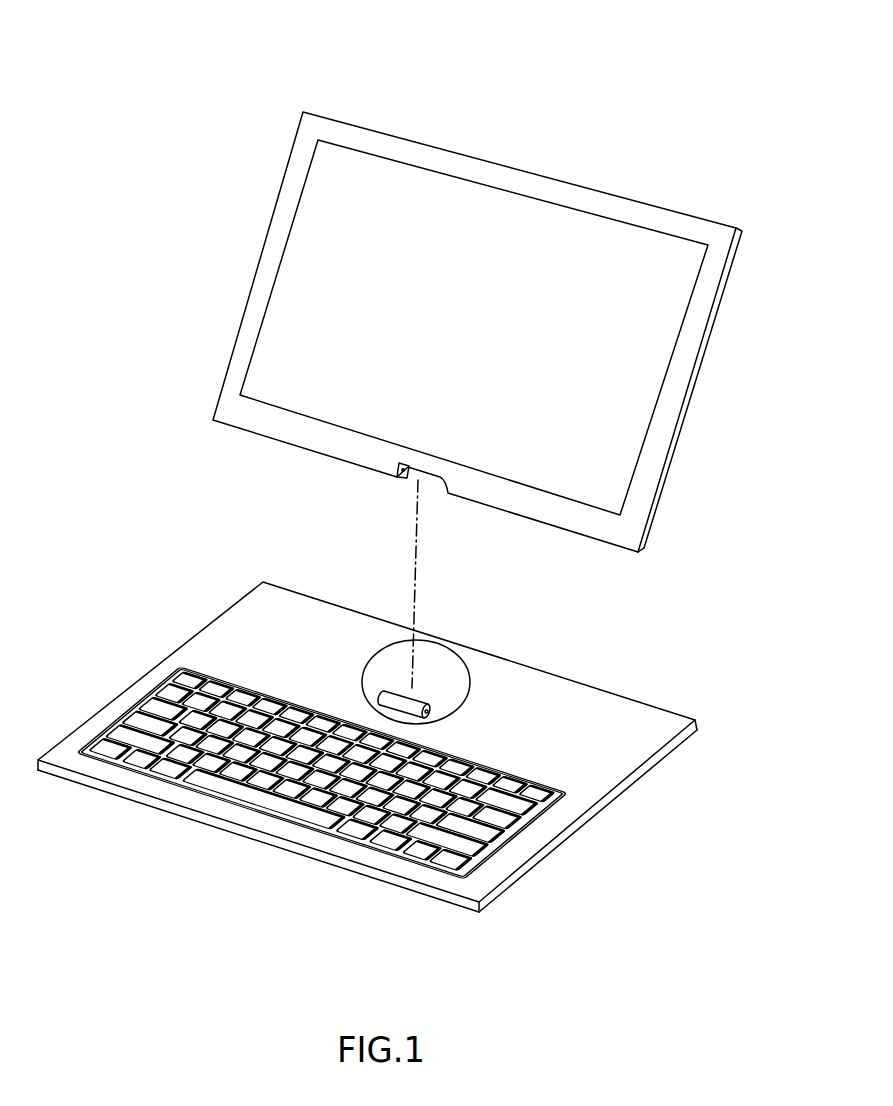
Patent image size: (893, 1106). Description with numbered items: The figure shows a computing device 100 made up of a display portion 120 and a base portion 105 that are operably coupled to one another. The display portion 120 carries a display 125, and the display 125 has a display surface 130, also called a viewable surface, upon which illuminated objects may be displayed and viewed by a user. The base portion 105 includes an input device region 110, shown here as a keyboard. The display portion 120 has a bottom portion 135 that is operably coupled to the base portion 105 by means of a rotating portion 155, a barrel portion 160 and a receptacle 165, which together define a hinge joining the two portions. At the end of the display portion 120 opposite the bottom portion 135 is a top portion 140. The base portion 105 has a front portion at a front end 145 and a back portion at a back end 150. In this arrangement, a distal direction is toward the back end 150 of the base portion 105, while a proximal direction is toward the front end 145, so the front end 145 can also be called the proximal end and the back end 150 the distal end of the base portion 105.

The computing device 100 is at (121, 466).
The base portion 105 is at (240, 623).
The input device region 110 is at (165, 715).
The display portion 120 is at (287, 190).
The display 125 is at (372, 175).
The display surface 130 is at (606, 259).
The bottom portion 135 is at (660, 545).
The top portion 140 is at (754, 234).
The front end 145 is at (443, 921).
The back end 150 is at (710, 716).
The rotating portion 155 is at (450, 672).
The barrel portion 160 is at (390, 697).
The receptacle 165 is at (402, 478).